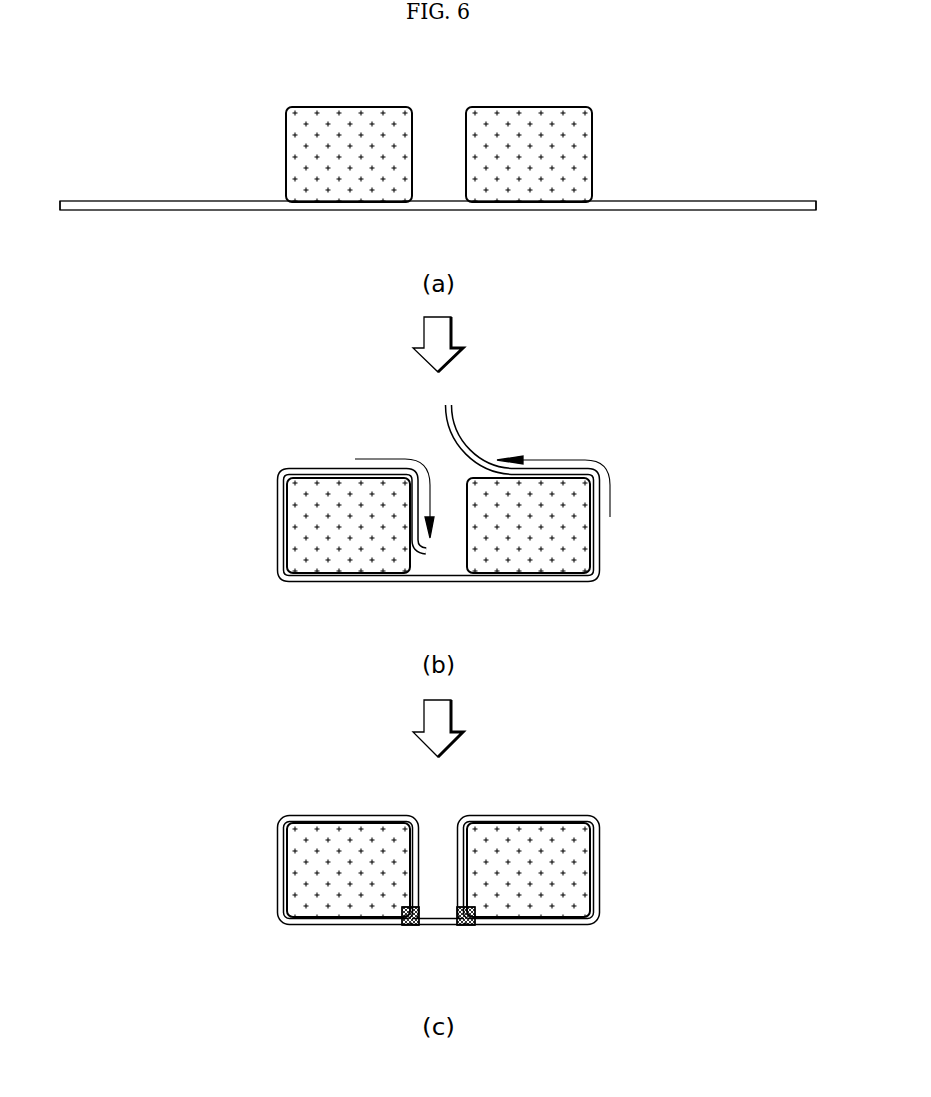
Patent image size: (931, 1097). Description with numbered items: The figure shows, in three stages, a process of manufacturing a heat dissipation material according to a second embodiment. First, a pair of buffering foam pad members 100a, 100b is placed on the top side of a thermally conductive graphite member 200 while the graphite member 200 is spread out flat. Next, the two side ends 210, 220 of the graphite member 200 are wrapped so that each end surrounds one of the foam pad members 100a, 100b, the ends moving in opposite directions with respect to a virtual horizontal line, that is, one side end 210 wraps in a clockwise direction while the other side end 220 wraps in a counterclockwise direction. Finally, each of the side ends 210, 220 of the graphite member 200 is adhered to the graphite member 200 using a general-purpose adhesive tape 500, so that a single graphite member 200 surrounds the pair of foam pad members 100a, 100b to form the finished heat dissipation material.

The foam pad member 100a is at (348, 115).
The foam pad member 100b is at (528, 115).
The graphite member 200 is at (243, 218).
The side end 210 is at (62, 200).
The side end 220 is at (812, 200).
The adhesive tape 500 is at (470, 928).